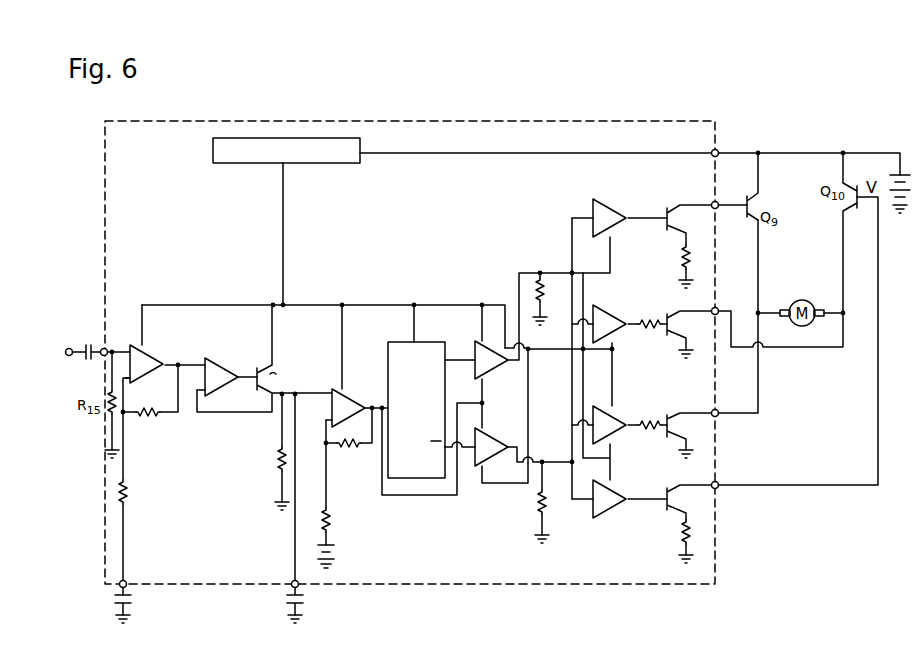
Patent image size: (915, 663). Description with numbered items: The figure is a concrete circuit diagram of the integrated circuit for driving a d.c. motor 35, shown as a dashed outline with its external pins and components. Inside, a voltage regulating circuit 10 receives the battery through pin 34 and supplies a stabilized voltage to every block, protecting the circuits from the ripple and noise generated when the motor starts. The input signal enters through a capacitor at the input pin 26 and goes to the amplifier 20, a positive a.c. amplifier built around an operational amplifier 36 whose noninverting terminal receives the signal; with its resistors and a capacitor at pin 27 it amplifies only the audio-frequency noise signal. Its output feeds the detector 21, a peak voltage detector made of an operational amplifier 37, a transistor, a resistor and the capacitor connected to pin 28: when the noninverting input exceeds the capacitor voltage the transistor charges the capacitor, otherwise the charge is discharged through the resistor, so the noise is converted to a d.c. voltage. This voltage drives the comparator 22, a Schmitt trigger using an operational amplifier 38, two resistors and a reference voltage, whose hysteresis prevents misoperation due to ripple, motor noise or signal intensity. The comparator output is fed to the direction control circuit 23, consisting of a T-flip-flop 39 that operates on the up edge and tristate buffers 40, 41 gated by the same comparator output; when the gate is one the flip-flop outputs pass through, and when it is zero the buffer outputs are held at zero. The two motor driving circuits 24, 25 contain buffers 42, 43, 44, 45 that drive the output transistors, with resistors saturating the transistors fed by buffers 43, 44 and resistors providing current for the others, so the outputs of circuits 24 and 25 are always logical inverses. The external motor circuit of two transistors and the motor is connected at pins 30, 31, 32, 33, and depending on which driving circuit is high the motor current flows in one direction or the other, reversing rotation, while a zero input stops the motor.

The voltage regulating circuit 10 is at (336, 163).
The amplifier 20 is at (195, 443).
The detector 21 is at (232, 509).
The comparator 22 is at (400, 436).
The direction control circuit 23 is at (499, 390).
The motor driving circuit 24 is at (644, 270).
The motor driving circuit 25 is at (644, 471).
The input pin 26 is at (108, 345).
The pin 27 is at (127, 579).
The pin 28 is at (289, 580).
The pin 30 is at (719, 201).
The pin 31 is at (719, 308).
The pin 32 is at (720, 420).
The pin 33 is at (720, 492).
The pin 34 is at (719, 149).
The integrated circuit for driving a d.c. motor 35 is at (566, 131).
The operational amplifier 36 is at (150, 358).
The operational amplifier 37 is at (222, 372).
The operational amplifier 38 is at (345, 401).
The T-flip-flop 39 is at (420, 351).
The tristate buffer 40 is at (490, 370).
The tristate buffer 41 is at (492, 446).
The buffer 42 is at (616, 213).
The buffer 43 is at (618, 330).
The buffer 44 is at (618, 418).
The buffer 45 is at (603, 503).